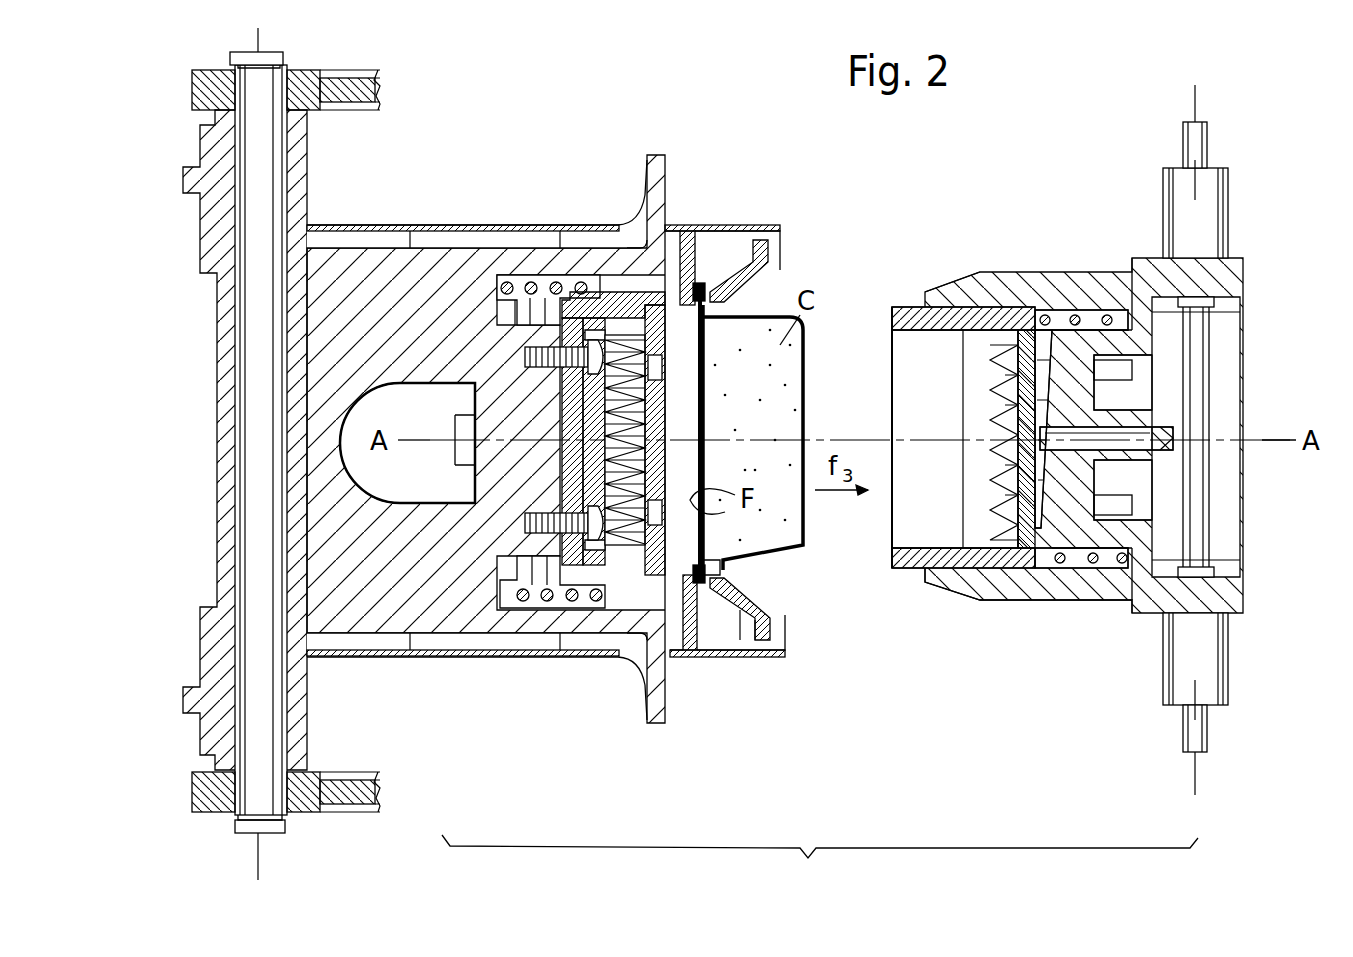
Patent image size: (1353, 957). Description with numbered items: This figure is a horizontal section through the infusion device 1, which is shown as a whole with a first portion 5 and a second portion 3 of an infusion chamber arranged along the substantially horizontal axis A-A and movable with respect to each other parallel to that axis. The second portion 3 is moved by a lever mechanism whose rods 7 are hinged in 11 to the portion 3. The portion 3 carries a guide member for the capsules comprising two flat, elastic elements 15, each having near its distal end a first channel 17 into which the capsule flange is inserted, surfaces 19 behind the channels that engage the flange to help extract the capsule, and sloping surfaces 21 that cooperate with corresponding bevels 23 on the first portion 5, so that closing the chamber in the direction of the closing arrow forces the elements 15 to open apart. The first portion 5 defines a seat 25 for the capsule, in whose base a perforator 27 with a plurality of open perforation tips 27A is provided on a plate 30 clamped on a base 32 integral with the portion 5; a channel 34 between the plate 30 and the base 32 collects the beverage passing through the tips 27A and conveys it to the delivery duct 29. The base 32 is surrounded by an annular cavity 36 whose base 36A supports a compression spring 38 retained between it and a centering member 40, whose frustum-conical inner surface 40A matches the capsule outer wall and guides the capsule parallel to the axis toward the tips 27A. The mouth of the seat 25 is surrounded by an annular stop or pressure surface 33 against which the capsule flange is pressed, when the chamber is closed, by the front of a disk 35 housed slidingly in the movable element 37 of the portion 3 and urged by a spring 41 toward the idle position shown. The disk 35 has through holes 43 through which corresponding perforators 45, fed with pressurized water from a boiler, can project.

The infusion device 1 is at (820, 867).
The second portion of the infusion chamber 3 is at (518, 162).
The first portion of the infusion chamber 5 is at (1037, 272).
The rods of the lever mechanism 7 is at (350, 100).
The hinge of the rods to the portion 3 11 is at (248, 358).
The guide member elements 15 is at (560, 225).
The first channel 17 is at (700, 285).
The surfaces engaging the capsule flange 19 is at (693, 682).
The sloping surfaces 21 is at (760, 290).
The bevels or sloping surfaces 23 is at (950, 590).
The seat or compartment 25 is at (940, 511).
The perforator 27 is at (978, 416).
The perforation tips 27A is at (1000, 465).
The delivery duct 29 is at (1168, 428).
The plate 30 is at (1000, 345).
The base 32 is at (1062, 345).
The annular stop or pressure surface 33 is at (905, 575).
The channel 34 is at (1045, 462).
The disk 35 is at (665, 385).
The seat or annular cavity 36 is at (1078, 565).
The base of the seat 36 36A is at (1122, 320).
The movable element 37 is at (445, 258).
The compression spring 38 is at (1120, 565).
The centering member 40 is at (905, 565).
The frustum-conical inner surface 40A is at (908, 330).
The spring 41 is at (530, 610).
The through holes 43 is at (665, 440).
The perforators 45 is at (665, 470).